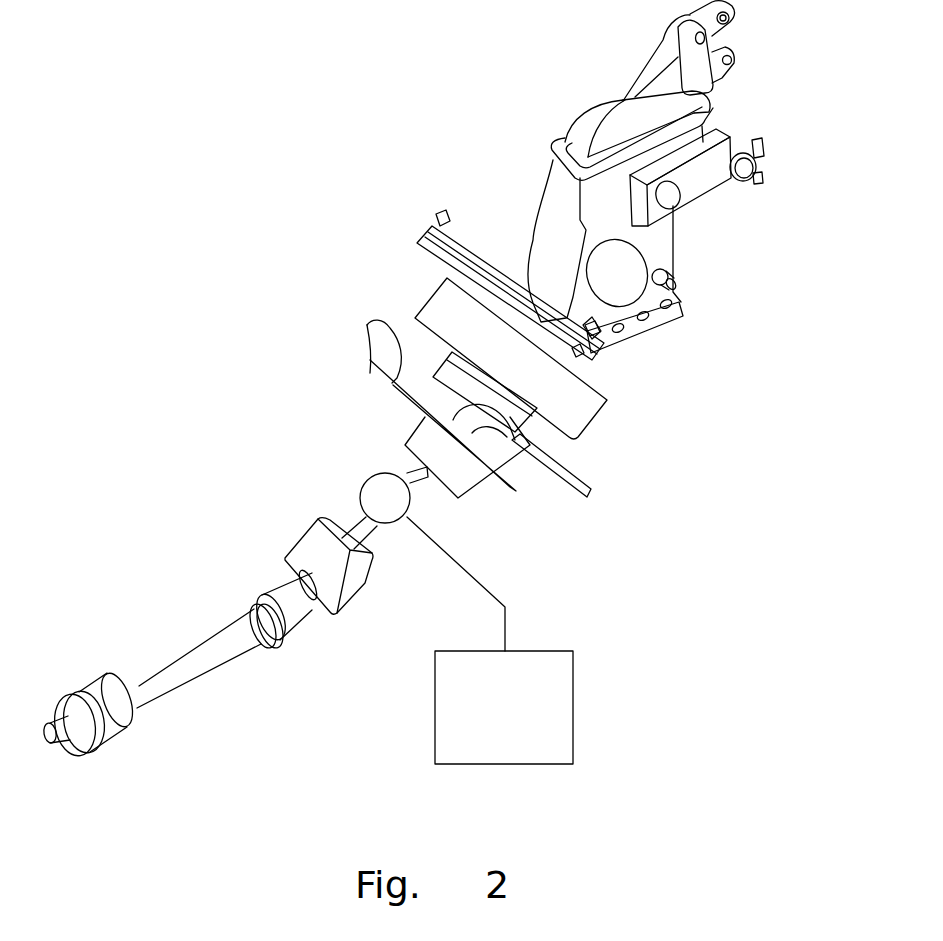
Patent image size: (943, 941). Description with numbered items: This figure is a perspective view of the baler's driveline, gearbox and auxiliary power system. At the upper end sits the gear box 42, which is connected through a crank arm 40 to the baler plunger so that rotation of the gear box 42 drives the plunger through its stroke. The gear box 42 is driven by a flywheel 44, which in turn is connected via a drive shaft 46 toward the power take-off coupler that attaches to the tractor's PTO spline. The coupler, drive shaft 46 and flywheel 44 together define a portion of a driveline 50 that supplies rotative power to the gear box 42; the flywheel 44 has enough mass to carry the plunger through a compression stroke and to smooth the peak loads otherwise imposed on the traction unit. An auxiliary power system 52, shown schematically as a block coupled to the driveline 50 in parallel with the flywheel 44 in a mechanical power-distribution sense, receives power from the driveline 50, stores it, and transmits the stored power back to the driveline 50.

The crank arm 40 is at (716, 181).
The gear box 42 is at (598, 113).
The flywheel 44 is at (437, 305).
The drive shaft 46 is at (360, 527).
The driveline 50 is at (292, 518).
The auxiliary power system 52 is at (578, 690).